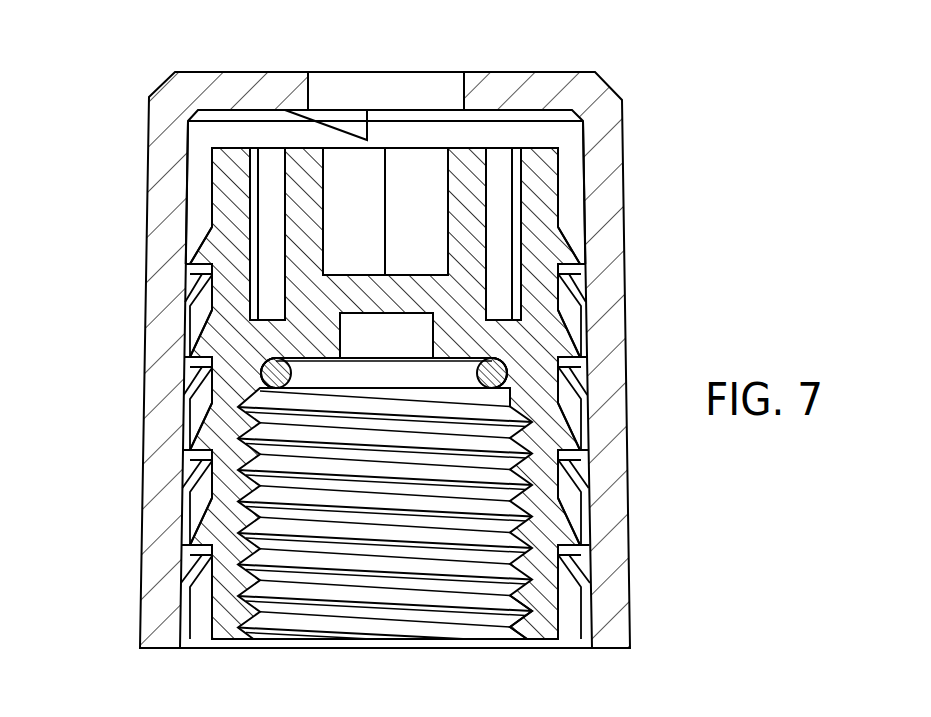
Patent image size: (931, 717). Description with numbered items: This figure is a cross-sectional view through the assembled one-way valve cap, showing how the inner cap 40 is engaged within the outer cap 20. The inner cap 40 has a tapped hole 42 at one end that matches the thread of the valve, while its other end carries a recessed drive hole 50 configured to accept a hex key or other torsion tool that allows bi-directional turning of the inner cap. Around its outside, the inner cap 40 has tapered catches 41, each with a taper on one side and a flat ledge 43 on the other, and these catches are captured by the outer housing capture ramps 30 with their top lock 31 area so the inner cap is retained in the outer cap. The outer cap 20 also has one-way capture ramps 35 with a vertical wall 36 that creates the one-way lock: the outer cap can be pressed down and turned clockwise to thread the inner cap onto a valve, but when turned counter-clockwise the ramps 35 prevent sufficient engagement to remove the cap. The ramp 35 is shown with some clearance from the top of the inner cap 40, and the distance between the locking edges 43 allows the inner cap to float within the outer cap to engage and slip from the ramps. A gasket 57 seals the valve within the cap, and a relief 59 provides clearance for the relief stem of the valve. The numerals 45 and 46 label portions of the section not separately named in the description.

The outer cap 20 is at (143, 613).
The outer housing capture ramps 30 is at (197, 582).
The top lock area 31 is at (190, 270).
The one-way capture ramps 35 is at (297, 113).
The vertical wall 36 is at (367, 122).
The inner cap 40 is at (455, 72).
The tapered catches 41 is at (207, 243).
The tapped hole 42 is at (263, 612).
The ledge 43 is at (190, 453).
The threaded insert body 45 is at (245, 405).
The bolt bottom 46 is at (525, 623).
The recessed drive hole 50 is at (376, 192).
The gasket 57 is at (498, 378).
The relief 59 is at (433, 325).